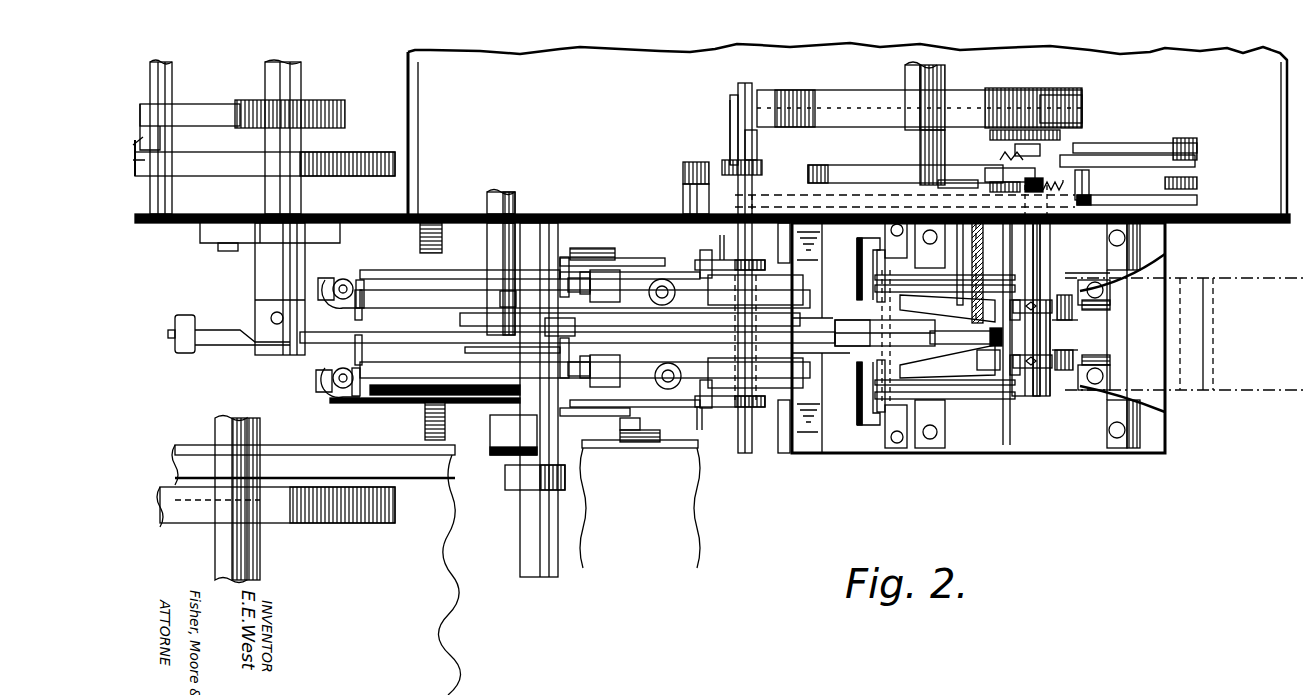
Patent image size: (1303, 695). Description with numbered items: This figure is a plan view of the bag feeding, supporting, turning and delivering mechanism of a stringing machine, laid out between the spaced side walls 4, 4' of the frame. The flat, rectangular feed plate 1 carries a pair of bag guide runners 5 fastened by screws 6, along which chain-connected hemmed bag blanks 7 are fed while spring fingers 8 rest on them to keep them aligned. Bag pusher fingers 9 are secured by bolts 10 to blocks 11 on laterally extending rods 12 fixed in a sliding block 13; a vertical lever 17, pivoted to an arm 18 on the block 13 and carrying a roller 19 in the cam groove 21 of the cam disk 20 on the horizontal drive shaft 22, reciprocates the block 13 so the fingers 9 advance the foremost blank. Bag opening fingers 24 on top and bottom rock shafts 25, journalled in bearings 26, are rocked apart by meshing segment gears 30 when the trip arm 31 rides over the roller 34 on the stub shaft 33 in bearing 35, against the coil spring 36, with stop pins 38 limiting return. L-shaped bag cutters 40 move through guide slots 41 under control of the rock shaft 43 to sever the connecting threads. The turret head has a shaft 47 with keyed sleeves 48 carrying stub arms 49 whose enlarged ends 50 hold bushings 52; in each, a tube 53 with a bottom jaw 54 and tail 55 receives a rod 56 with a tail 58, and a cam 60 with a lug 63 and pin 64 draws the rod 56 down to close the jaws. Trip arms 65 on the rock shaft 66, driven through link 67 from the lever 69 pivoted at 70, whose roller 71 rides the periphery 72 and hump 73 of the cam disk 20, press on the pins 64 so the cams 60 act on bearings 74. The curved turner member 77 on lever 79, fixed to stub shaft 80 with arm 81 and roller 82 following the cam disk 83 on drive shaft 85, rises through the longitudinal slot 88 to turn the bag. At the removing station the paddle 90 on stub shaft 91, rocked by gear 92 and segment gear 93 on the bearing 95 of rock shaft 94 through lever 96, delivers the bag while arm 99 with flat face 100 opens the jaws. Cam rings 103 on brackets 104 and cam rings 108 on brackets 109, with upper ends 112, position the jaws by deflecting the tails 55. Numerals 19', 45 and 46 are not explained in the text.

The feed or transfer plate 1 is at (1055, 440).
The side wall 4 is at (595, 202).
The side wall 4' is at (640, 504).
The bag guide runners 5 is at (1165, 260).
The screws 6 is at (1103, 293).
The bag blanks 7 is at (1184, 334).
The spring fingers 8 is at (1080, 270).
The bag pusher fingers 9 is at (947, 333).
The bolts 10 is at (1050, 396).
The blocks 11 is at (1075, 352).
The laterally extending rods 12 is at (1040, 396).
The block 13 is at (1089, 185).
The vertical lever 17 is at (1152, 143).
The arm 18 is at (1130, 172).
The roller 19 is at (1083, 104).
The link 19' is at (1097, 143).
The cam disk 20 is at (919, 108).
The cam groove 21 is at (990, 95).
The horizontal drive shaft 22 is at (935, 60).
The bag opening finger 24 is at (953, 331).
The rock shafts 25 is at (990, 360).
The bearings 26 is at (975, 250).
The segment gears 30 is at (1000, 165).
The trip arm 31 is at (826, 172).
The stub shaft 33 is at (683, 176).
The roller 34 is at (685, 164).
The bearing 35 is at (690, 197).
The coil spring 36 is at (619, 428).
The stop pins or screws 38 is at (925, 170).
The bag cutters 40 is at (877, 272).
The guide slots 41 is at (868, 250).
The rock shaft 43 is at (1030, 233).
The spring 45 is at (1044, 176).
The collar 46 is at (1200, 182).
The shaft 47 is at (505, 195).
The sleeves 48 is at (495, 270).
The stub arms 49 is at (385, 330).
The rounded or enlarged ends 50 is at (310, 296).
The bushings or sleeves 52 is at (565, 345).
The tube 53 is at (512, 371).
The jaw or finger 54 is at (585, 329).
The tail 55 is at (338, 278).
The rod 56 is at (346, 280).
The tail 58 is at (495, 280).
The cam 60 is at (366, 278).
The lug 63 is at (355, 360).
The pin 64 is at (533, 345).
The trip arms 65 is at (722, 247).
The rock shaft 66 is at (790, 242).
The link 67 is at (772, 143).
The lever 69 is at (730, 155).
The pivot 70 is at (760, 170).
The roller 71 is at (728, 110).
The periphery 72 is at (825, 102).
The hump 73 is at (765, 100).
The bearings 74 is at (380, 284).
The turner member or plate 77 is at (885, 333).
The lever 79 is at (765, 330).
The stub shaft 80 is at (520, 513).
The arm 81 is at (428, 478).
The roller 82 is at (255, 505).
The cam disk 83 is at (385, 525).
The horizontal drive shaft 85 is at (246, 400).
The longitudinal slot 88 is at (838, 318).
The paddle or arm 90 is at (270, 318).
The stub shaft 91 is at (292, 186).
The gear 92 is at (240, 106).
The segment gear 93 is at (335, 108).
The rock shaft 94 is at (172, 75).
The bearing 95 is at (178, 138).
The lever 96 is at (150, 158).
The arm 99 is at (215, 336).
The flat face 100 is at (182, 314).
The cam rings 103 is at (575, 262).
The brackets 104 is at (420, 235).
The cam rings 108 is at (630, 324).
The brackets 109 is at (625, 340).
The upper ends 112 is at (680, 324).